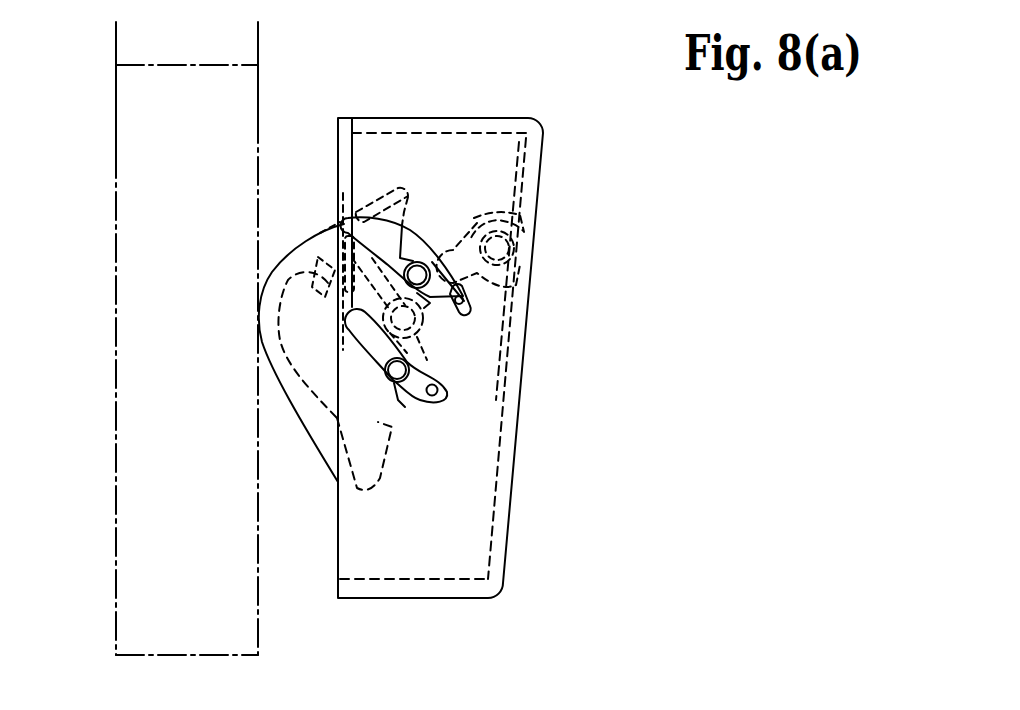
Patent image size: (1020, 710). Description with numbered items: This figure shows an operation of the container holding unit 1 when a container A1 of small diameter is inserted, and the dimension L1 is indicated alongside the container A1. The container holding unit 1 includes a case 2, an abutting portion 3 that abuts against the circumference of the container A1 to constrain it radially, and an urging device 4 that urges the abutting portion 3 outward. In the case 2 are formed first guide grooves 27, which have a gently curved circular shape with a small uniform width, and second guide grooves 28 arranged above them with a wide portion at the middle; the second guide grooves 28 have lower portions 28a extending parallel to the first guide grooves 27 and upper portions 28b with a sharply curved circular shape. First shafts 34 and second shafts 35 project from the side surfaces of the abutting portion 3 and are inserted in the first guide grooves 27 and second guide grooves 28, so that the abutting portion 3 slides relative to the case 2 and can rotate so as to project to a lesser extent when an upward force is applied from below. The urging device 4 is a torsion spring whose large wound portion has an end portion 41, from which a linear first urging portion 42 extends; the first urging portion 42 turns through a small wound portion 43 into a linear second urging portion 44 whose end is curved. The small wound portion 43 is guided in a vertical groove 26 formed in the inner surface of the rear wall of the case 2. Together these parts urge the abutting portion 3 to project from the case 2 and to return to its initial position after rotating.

The container holding unit 1 is at (512, 118).
The case 2 is at (504, 556).
The abutting portion 3 is at (293, 398).
The urging device 4 is at (638, 195).
The vertical groove 26 is at (542, 162).
The first guide grooves 27 is at (437, 400).
The second guide grooves 28 is at (640, 325).
The lower portions 28a is at (447, 300).
The upper portions 28b is at (465, 304).
The first shafts 34 is at (400, 408).
The second shafts 35 is at (433, 253).
The end portion 41 is at (340, 219).
The first urging portion 42 is at (514, 288).
The small wound portion 43 is at (538, 232).
The second urging portion 44 is at (518, 212).
The container A1 is at (130, 214).
The distance L1 is at (118, 40).